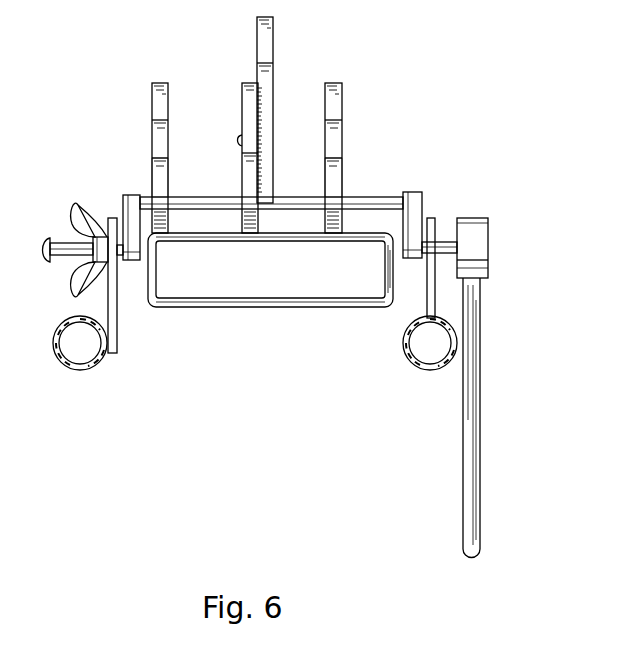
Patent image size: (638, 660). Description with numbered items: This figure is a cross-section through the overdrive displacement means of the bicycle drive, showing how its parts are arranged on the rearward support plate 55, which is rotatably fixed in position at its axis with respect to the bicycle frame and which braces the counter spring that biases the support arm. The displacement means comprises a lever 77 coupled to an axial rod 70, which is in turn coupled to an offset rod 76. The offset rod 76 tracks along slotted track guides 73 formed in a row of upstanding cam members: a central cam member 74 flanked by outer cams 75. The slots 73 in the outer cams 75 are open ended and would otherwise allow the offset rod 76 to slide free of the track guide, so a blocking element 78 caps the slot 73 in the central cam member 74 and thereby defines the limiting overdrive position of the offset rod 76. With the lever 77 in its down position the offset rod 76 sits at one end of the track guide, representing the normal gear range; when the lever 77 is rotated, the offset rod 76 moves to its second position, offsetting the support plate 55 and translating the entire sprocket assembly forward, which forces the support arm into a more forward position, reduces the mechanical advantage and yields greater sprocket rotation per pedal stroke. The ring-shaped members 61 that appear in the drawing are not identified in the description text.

The rearward support plate 55 is at (252, 307).
The ring 61 is at (80, 372).
The axial rod 70 is at (445, 242).
The slotted track guides 73 is at (152, 103).
The central cam member 74 is at (242, 177).
The cams 75 is at (155, 180).
The offset rod 76 is at (370, 200).
The lever 77 is at (467, 472).
The blocking element 78 is at (262, 77).